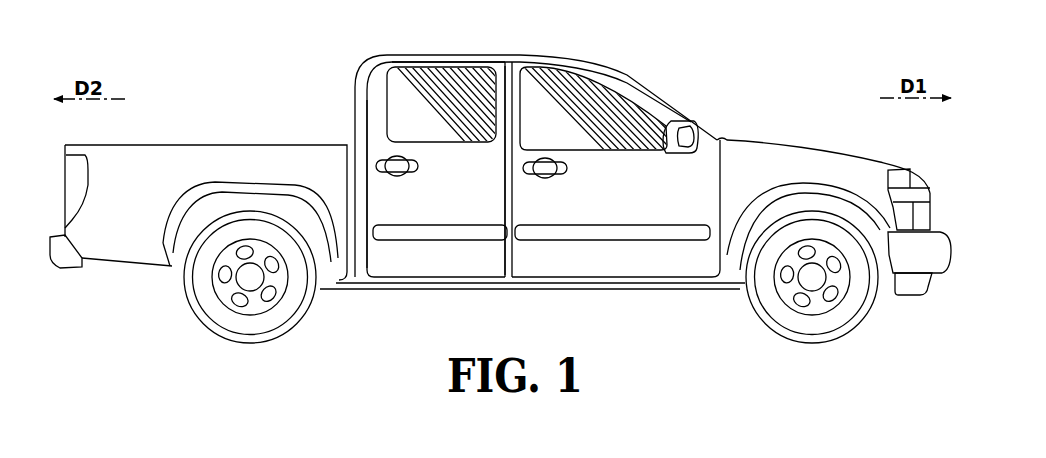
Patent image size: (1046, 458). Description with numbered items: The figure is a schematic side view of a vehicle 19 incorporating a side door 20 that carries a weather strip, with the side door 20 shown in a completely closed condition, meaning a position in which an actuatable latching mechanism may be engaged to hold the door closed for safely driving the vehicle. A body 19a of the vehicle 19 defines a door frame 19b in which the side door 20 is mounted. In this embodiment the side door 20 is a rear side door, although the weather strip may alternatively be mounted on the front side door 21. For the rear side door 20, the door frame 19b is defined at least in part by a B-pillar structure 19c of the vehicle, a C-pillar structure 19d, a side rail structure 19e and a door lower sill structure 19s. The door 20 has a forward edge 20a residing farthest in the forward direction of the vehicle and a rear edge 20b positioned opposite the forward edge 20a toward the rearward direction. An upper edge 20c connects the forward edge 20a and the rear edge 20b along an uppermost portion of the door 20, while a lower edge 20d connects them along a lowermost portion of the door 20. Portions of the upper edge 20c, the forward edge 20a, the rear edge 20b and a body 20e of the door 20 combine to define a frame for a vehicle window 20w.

The vehicle 19 is at (755, 69).
The body 19a is at (696, 105).
The door frame 19b is at (451, 54).
The "B"-pillar structure 19c is at (508, 78).
The "C"-pillar structure 19d is at (356, 75).
The side rail structure 19e is at (485, 58).
The door lower sill structure 19s is at (488, 287).
The side door 20 is at (430, 259).
The forward edge 20a is at (512, 90).
The rear edge 20b is at (366, 97).
The upper edge 20c is at (410, 60).
The lower edge 20d is at (447, 277).
The body 20e is at (437, 193).
The vehicle window 20w is at (418, 122).
The front side door 21 is at (621, 203).